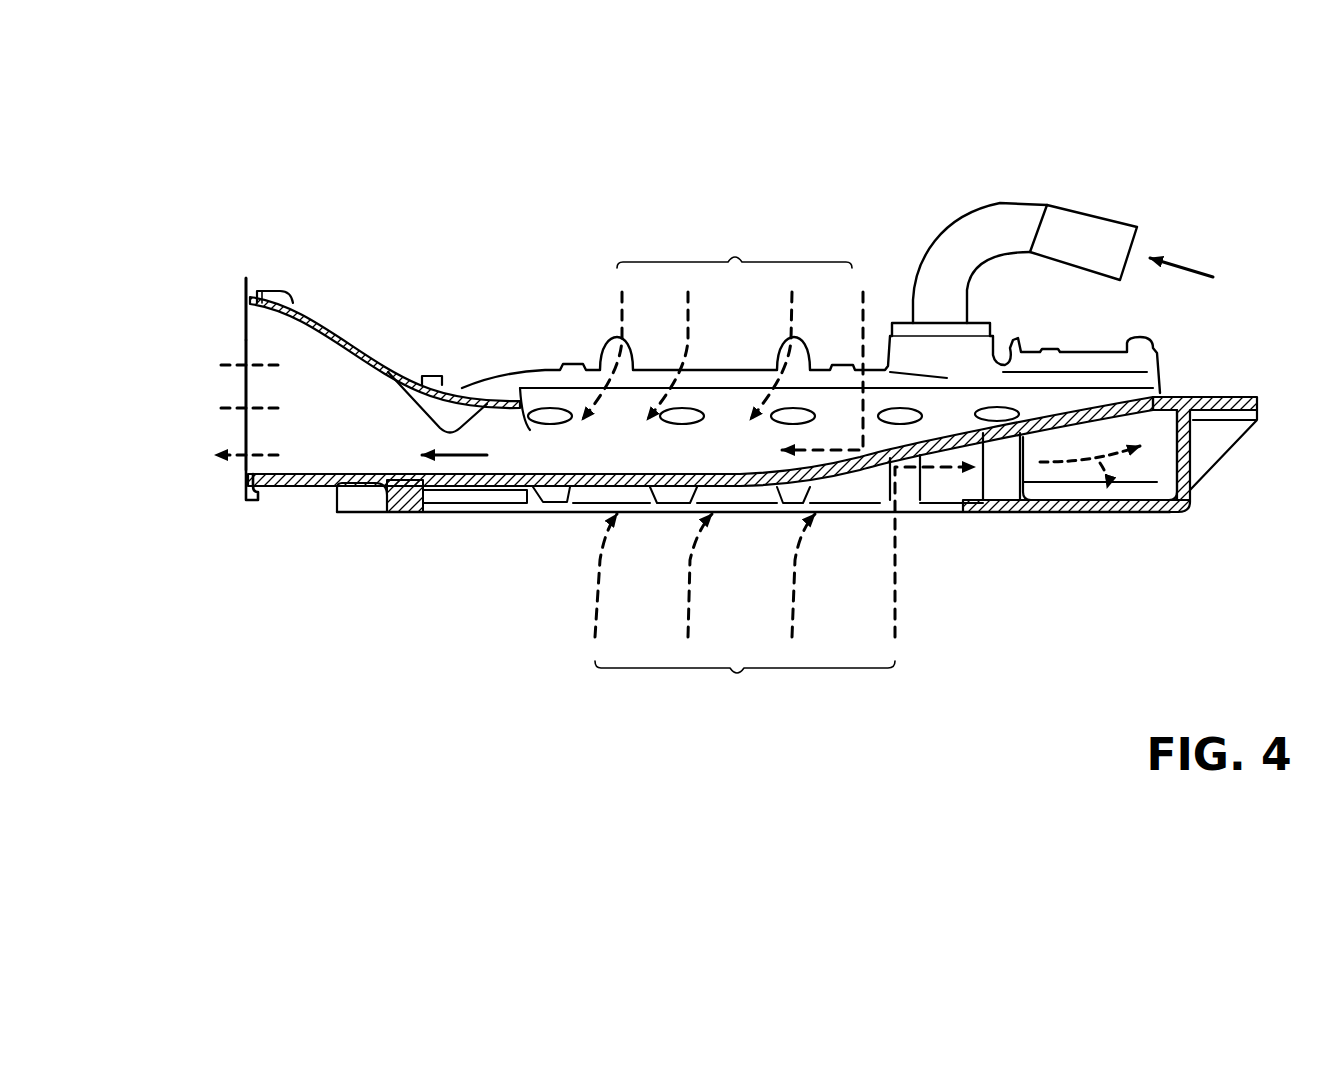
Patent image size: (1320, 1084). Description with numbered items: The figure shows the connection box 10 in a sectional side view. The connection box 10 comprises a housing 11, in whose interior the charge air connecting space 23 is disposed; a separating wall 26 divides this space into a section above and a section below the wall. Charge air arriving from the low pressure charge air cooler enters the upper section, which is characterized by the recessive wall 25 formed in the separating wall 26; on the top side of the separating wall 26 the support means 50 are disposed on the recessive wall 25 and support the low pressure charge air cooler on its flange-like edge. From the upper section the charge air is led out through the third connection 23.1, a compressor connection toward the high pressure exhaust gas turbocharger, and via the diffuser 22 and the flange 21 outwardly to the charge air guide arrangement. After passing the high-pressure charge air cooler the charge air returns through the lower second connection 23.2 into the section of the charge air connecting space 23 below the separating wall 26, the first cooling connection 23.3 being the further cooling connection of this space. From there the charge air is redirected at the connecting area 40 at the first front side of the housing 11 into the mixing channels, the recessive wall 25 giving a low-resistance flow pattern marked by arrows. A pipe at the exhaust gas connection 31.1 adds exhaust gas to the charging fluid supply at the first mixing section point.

The connection box 10 is at (1171, 396).
The housing 11 is at (446, 375).
The flange 21 is at (232, 288).
The diffuser 22 is at (345, 318).
The charge air connecting space 23 is at (592, 462).
The third connection 23.1 is at (730, 375).
The second connection 23.2 is at (843, 504).
The first cooling connection 23.3 is at (246, 331).
The recessive wall 25 is at (1050, 505).
The separating wall 26 is at (960, 434).
The exhaust gas connection 31.1 is at (977, 343).
The connecting area 40 is at (1147, 492).
The support means 50 is at (1010, 457).